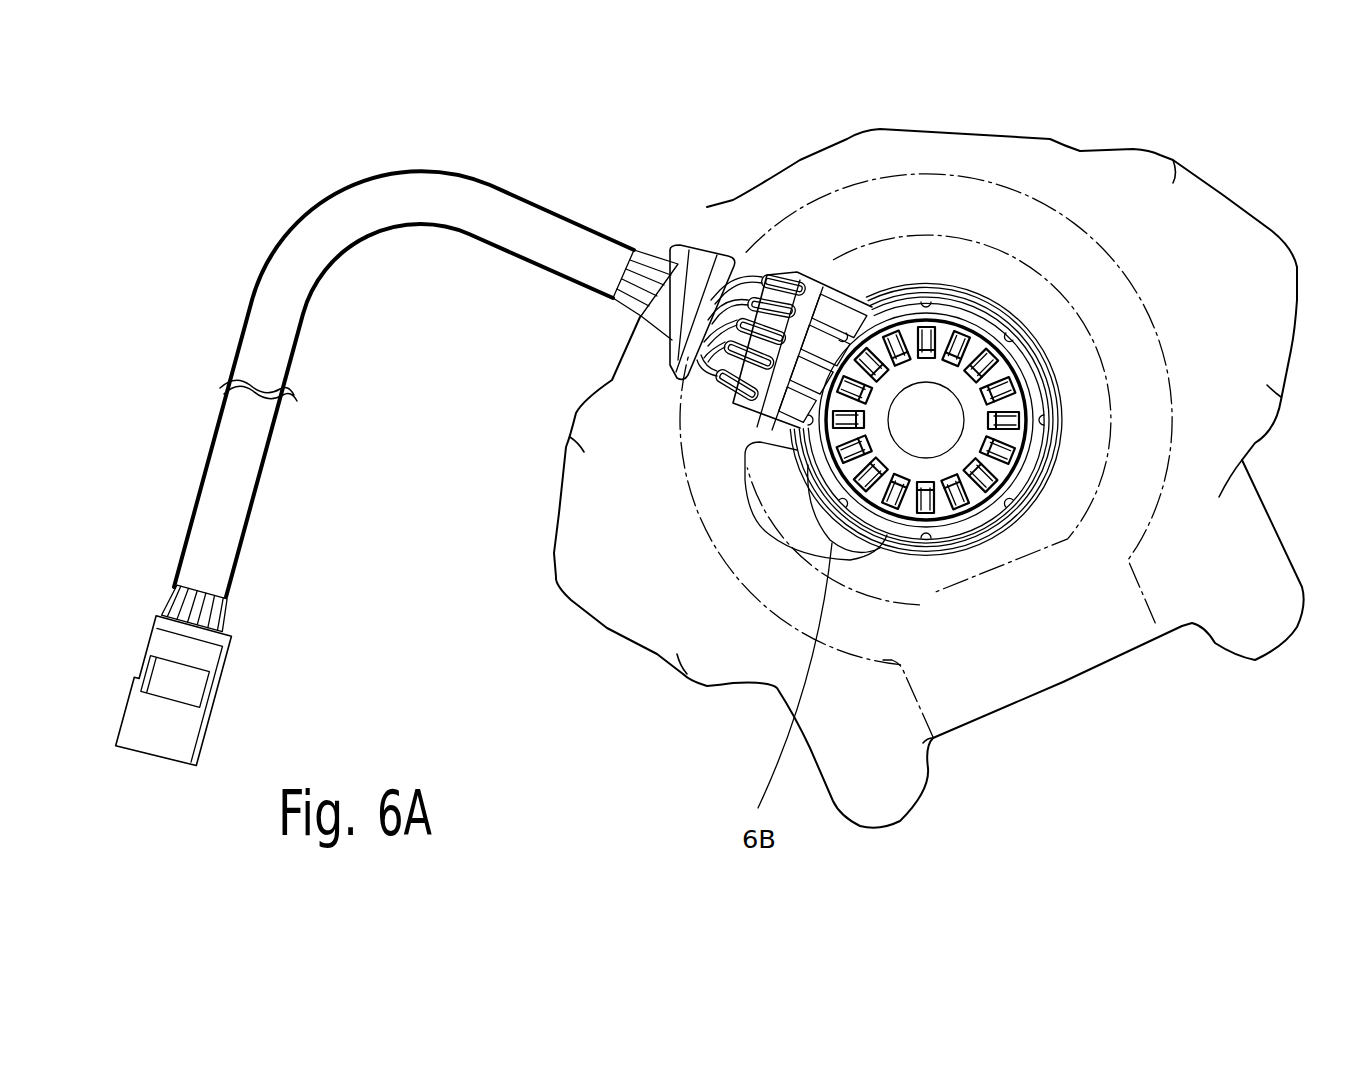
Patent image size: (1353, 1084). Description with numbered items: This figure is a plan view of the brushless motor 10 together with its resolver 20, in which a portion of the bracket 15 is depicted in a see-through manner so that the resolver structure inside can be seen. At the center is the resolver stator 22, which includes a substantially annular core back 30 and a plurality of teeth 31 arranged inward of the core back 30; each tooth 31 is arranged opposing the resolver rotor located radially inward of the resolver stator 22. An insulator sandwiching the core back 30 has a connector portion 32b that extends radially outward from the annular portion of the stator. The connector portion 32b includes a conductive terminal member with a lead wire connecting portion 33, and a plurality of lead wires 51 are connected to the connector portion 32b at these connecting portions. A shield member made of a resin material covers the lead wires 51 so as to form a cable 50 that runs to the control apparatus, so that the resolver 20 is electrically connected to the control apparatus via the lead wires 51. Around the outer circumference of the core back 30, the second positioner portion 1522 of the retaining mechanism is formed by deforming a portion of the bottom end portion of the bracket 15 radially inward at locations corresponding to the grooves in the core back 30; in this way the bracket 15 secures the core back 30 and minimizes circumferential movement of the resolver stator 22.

The brushless motor 10 is at (929, 471).
The bracket 15 is at (1223, 198).
The resolver 20 is at (714, 312).
The resolver stator 22 is at (930, 490).
The core back 30 is at (926, 353).
The teeth 31 is at (953, 355).
The connector portion 32b is at (762, 422).
The lead wire connecting portion 33 is at (779, 279).
The cable 50 is at (332, 196).
The lead wire 51 is at (742, 247).
The second positioner portion 1522 is at (1009, 505).